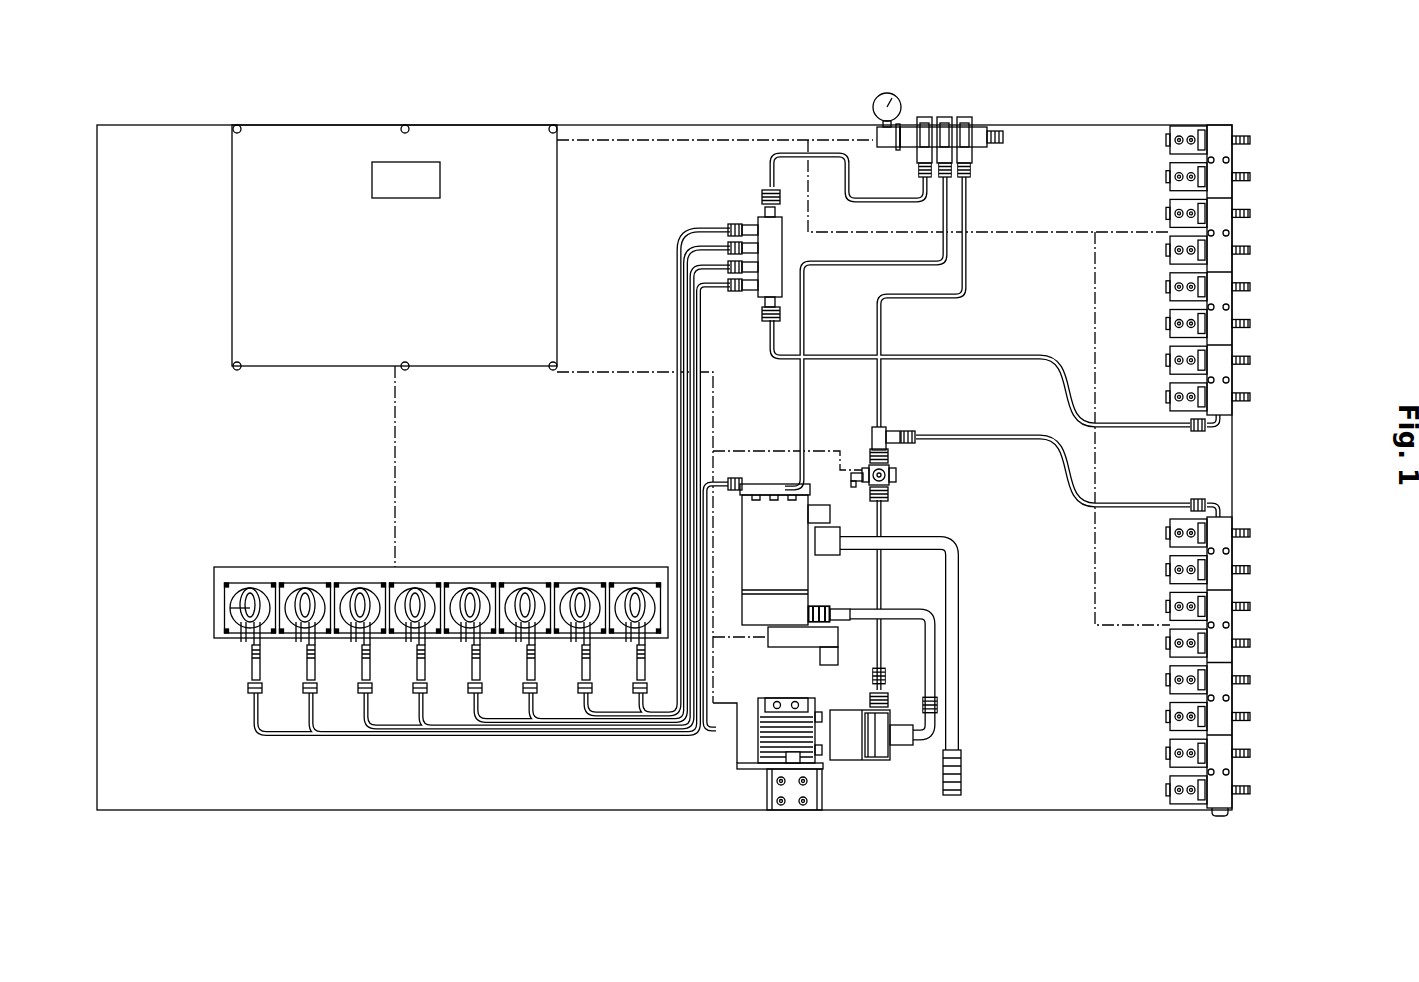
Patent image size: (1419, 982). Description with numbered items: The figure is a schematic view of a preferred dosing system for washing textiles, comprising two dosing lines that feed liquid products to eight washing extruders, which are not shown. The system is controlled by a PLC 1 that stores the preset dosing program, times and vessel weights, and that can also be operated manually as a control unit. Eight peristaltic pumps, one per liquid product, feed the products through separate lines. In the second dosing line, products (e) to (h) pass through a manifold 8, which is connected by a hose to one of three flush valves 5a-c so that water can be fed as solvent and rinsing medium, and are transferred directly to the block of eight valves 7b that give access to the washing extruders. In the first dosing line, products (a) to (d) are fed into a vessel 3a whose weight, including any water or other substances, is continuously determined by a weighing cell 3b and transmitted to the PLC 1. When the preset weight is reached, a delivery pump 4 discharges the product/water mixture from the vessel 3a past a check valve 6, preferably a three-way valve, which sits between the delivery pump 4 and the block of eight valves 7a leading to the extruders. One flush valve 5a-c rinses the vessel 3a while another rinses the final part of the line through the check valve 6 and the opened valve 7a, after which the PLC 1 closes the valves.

The PLC 1 is at (470, 187).
The vessel 3a is at (797, 577).
The weighing cell 3b is at (802, 635).
The delivery pump 4 is at (840, 743).
The flush valves 5a-c is at (928, 145).
The check valve 6 is at (897, 484).
The valve block 7a is at (1215, 642).
The valve block 7b is at (1220, 255).
The manifold 8 is at (766, 196).